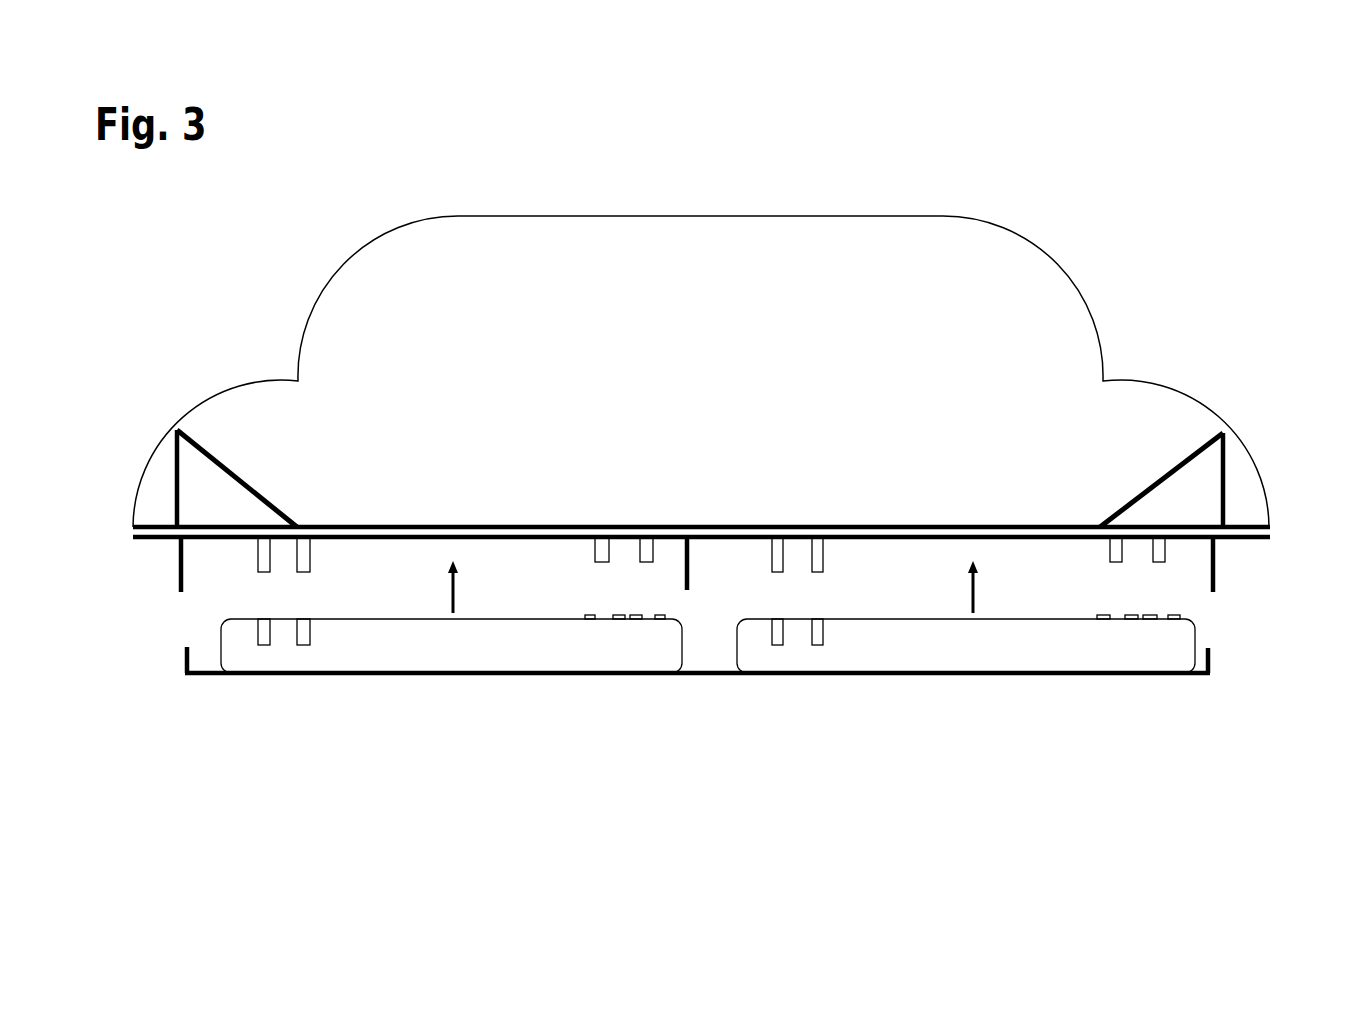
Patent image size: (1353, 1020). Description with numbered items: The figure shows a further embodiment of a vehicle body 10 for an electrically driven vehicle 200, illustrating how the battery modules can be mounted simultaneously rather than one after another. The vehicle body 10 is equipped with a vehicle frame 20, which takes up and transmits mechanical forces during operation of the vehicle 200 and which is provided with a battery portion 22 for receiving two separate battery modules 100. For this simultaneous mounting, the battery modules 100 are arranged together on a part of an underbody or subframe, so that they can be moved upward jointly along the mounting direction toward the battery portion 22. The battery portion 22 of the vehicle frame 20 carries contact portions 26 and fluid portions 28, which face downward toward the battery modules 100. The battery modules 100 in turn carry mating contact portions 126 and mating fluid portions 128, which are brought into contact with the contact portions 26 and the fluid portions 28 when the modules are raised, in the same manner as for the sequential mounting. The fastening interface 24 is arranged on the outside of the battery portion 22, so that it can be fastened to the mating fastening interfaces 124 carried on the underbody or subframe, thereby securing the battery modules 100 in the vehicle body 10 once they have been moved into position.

The vehicle body 10 is at (424, 478).
The vehicle frame 20 is at (975, 526).
The battery portion 22 is at (1199, 589).
The fastening interface 24 is at (178, 568).
The contact portion 26 is at (268, 553).
The fluid portion 28 is at (647, 553).
The battery module 100 is at (498, 660).
The mating fastening interface 124 is at (182, 667).
The mating contact portion 126 is at (303, 645).
The mating fluid portion 128 is at (652, 614).
The vehicle 200 is at (1150, 231).